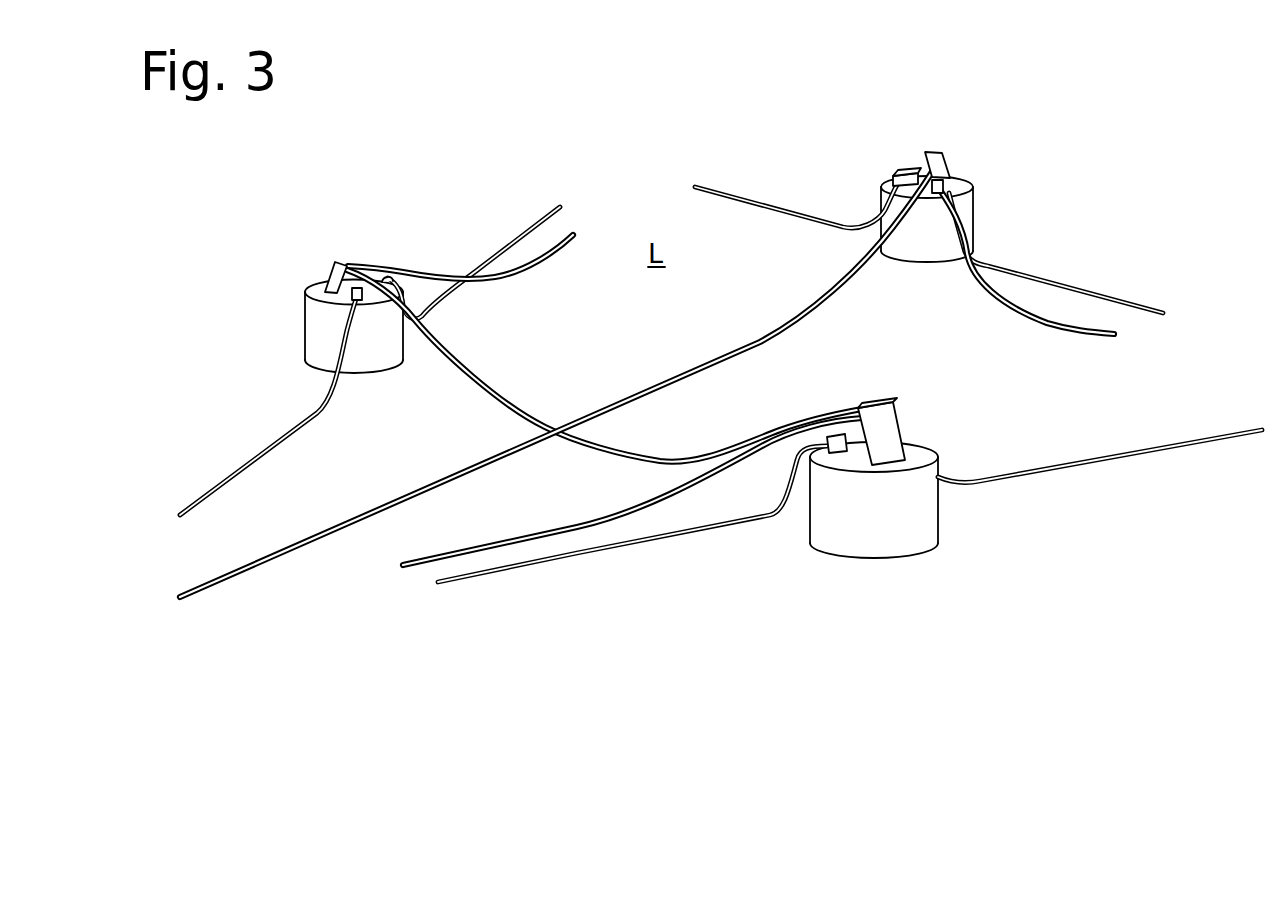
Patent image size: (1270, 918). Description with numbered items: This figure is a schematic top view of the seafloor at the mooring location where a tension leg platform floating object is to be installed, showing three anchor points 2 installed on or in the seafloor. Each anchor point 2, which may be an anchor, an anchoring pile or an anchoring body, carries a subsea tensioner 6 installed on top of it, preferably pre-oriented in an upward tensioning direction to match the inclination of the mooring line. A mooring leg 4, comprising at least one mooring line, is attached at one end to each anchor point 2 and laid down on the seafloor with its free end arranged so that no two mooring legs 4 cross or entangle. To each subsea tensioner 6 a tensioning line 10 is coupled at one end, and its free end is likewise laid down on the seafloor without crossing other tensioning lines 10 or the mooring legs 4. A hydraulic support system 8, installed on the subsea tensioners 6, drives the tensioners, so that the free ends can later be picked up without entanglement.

The anchor point 2 is at (317, 289).
The mooring leg 4 is at (256, 452).
The subsea tensioner 6 is at (352, 262).
The hydraulic support system 8 is at (780, 332).
The tensioning line 10 is at (537, 262).